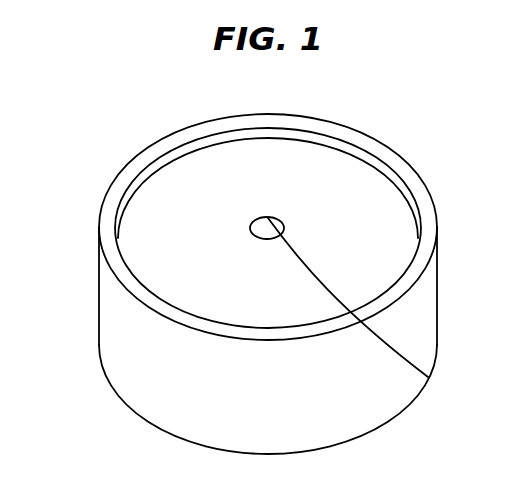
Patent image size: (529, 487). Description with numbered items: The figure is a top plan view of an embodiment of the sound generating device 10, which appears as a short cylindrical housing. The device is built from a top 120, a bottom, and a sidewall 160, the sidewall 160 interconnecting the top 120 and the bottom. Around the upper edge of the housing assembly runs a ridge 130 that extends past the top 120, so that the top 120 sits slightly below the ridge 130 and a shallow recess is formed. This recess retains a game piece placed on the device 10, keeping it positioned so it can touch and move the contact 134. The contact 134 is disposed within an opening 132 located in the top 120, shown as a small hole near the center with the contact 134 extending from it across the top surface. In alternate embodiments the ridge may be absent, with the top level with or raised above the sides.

The sound generating device 10 is at (263, 268).
The top 120 is at (268, 177).
The ridge 130 is at (363, 145).
The opening 132 is at (283, 231).
The contact 134 is at (428, 377).
The sidewall 160 is at (392, 407).